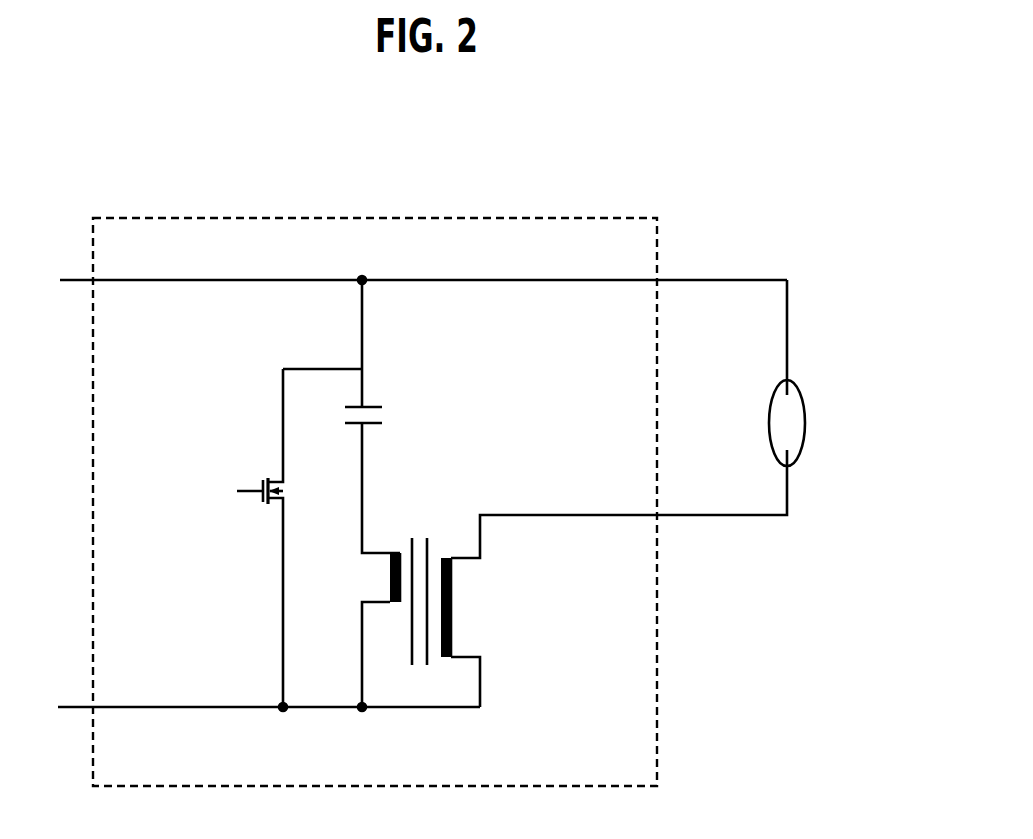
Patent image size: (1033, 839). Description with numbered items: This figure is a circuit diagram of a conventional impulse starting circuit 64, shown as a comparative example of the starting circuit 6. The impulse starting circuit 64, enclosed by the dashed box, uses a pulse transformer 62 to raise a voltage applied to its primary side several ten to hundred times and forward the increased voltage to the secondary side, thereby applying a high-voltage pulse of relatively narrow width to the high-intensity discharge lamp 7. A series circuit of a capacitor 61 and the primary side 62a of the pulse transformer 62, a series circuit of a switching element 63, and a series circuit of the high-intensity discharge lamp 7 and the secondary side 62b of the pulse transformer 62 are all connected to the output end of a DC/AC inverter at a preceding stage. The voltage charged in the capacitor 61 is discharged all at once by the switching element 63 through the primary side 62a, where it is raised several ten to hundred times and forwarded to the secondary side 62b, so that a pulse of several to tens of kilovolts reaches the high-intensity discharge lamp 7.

The starting circuit 6 is at (657, 658).
The high-intensity discharge lamp 7 is at (808, 395).
The capacitor 61 is at (388, 414).
The pulse transformer 62 is at (429, 557).
The primary side 62a is at (373, 578).
The secondary side 62b is at (458, 600).
The switching element 63 is at (260, 472).
The impulse starting circuit 64 is at (634, 168).